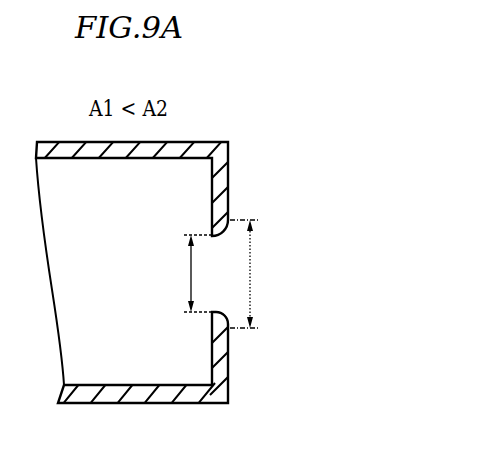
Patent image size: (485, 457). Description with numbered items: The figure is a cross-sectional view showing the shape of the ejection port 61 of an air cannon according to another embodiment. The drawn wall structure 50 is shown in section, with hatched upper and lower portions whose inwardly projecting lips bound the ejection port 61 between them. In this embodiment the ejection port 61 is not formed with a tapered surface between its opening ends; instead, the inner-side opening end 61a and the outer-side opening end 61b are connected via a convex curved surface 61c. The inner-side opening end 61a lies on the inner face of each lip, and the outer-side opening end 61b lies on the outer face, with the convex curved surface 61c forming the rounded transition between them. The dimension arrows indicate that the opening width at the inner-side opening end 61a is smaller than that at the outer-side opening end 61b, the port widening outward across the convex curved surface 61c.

The housing 50 is at (211, 118).
The ejection port 61 is at (218, 268).
The inner-side opening end 61a is at (199, 234).
The outer-side opening end 61b is at (230, 221).
The convex curved surface 61c is at (229, 313).